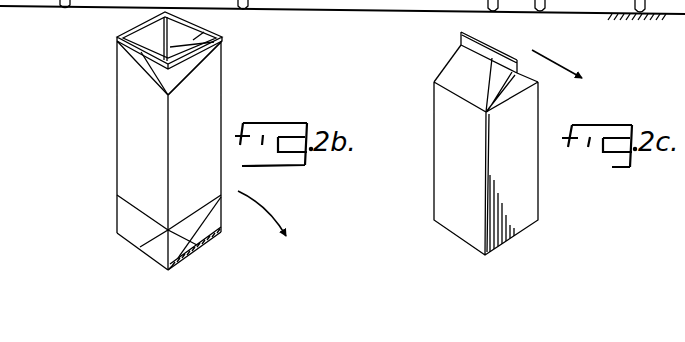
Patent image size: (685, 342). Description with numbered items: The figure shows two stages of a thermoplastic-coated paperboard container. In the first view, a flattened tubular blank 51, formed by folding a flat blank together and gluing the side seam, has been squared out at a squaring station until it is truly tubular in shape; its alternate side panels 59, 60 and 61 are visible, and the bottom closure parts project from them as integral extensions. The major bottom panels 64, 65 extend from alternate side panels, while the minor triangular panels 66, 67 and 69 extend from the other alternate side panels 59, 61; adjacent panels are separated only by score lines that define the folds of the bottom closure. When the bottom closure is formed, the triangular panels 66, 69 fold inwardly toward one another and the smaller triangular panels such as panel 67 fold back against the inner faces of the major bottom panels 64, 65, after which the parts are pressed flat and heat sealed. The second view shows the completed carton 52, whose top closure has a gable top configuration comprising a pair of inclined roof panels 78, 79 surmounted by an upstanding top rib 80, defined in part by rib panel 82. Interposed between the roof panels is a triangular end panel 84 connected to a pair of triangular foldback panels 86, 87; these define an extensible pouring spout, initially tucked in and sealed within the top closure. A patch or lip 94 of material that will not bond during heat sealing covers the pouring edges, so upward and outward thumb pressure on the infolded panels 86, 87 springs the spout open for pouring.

In FIG. 2B, the tubular blank 51 is at (112, 182).
In FIG. 2C, the completed carton 52 is at (433, 188).
In FIG. 2B, the side panel 59 is at (151, 141).
In FIG. 2B, the side panel 60 is at (204, 140).
In FIG. 2C, the side panel 60 is at (522, 172).
In FIG. 2C, the side panel 61 is at (469, 162).
In FIG. 2B, the major bottom panel 64 is at (140, 36).
In FIG. 2B, the major bottom panel 65 is at (207, 58).
In FIG. 2B, the minor triangular panel 66 is at (138, 67).
In FIG. 2B, the minor triangular panel 67 is at (122, 53).
In FIG. 2B, the minor triangular panel 69 is at (194, 40).
In FIG. 2C, the inclined roof panel 78 is at (458, 72).
In FIG. 2B, the inclined roof panel 79 is at (130, 220).
In FIG. 2C, the top rib 80 is at (493, 38).
In FIG. 2B, the rib panel 82 is at (137, 246).
In FIG. 2B, the triangular end panel 84 is at (211, 202).
In FIG. 2C, the triangular end panel 84 is at (515, 88).
In FIG. 2B, the triangular foldback panel 86 is at (177, 252).
In FIG. 2B, the triangular foldback panel 87 is at (213, 221).
In FIG. 2B, the patch or lip 94 is at (200, 261).